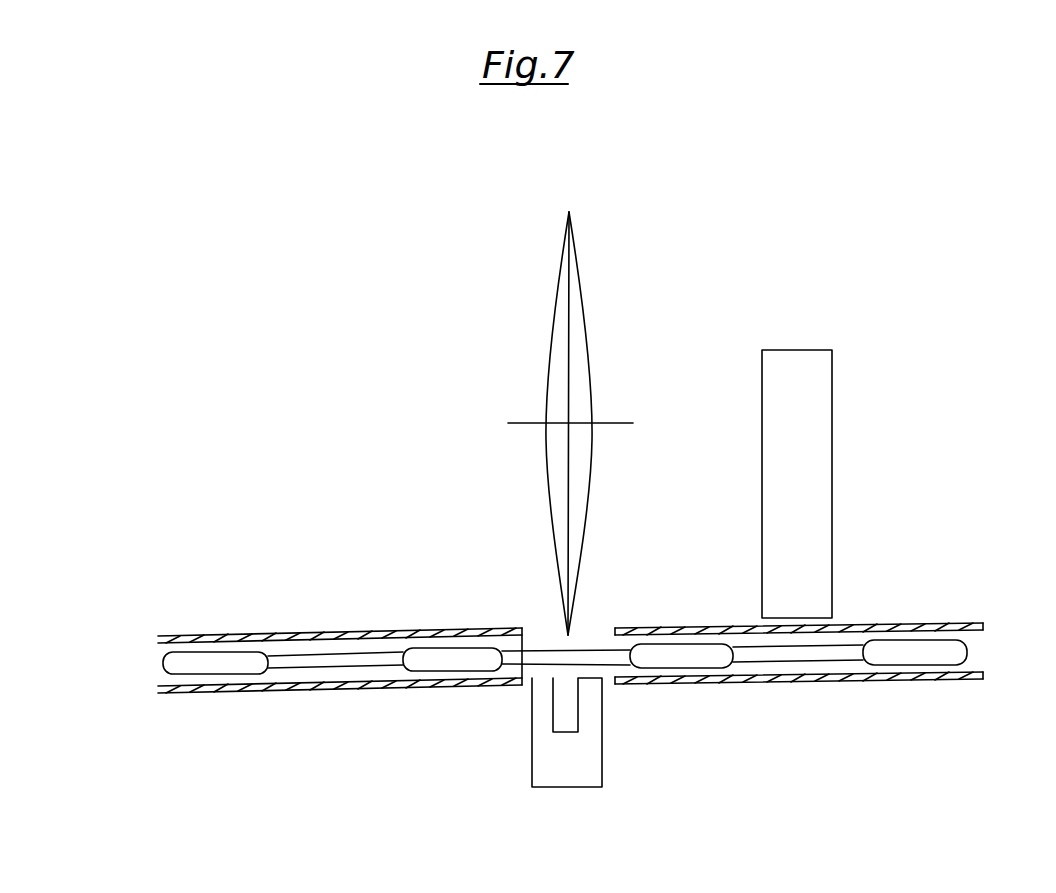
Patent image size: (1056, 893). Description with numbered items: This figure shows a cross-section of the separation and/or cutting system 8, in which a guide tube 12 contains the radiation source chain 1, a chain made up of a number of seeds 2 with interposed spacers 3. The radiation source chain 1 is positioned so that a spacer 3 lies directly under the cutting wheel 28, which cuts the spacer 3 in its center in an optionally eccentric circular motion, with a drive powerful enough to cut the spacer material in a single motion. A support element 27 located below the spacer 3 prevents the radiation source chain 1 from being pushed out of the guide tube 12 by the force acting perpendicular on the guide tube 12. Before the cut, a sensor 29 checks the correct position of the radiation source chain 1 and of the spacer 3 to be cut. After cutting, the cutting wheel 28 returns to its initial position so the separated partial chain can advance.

The radiation source chain 1 is at (733, 662).
The seed 2 is at (448, 662).
The spacer 3 is at (597, 657).
The separation and/or cutting system 8 is at (432, 445).
The guide tube 12 is at (232, 688).
The support element 27 is at (563, 762).
The cutting wheel 28 is at (583, 357).
The sensor 29 is at (790, 367).